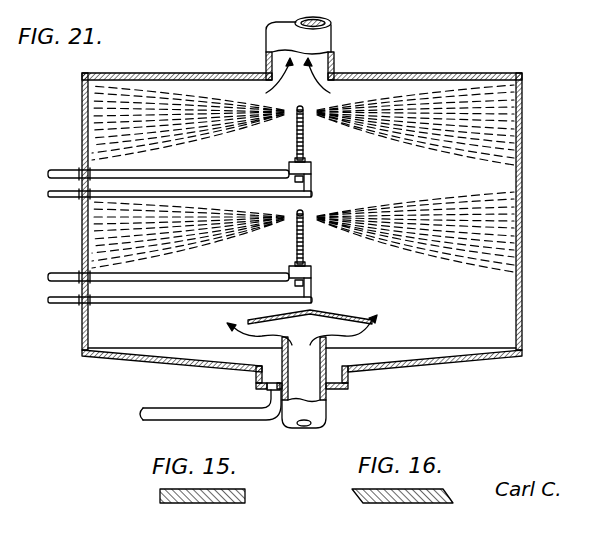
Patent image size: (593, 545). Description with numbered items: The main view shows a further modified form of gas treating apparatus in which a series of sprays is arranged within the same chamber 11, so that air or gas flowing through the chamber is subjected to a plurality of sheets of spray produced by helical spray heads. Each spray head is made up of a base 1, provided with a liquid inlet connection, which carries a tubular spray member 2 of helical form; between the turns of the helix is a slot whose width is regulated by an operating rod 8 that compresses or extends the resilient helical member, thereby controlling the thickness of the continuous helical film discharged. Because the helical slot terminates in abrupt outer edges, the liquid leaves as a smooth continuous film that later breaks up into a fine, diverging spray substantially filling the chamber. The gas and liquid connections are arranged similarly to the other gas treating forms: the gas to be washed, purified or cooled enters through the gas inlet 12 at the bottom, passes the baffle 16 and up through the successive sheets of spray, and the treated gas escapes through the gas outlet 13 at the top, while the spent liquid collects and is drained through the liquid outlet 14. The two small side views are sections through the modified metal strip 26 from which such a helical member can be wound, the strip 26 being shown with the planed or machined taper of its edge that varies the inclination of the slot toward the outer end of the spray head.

In FIG. 21, the base 1 is at (313, 168).
In FIG. 21, the tubular spray member 2 is at (303, 110).
In FIG. 21, the operating rod 8 is at (157, 179).
In FIG. 21, the chamber 11 is at (522, 292).
In FIG. 21, the gas inlet 12 is at (326, 410).
In FIG. 21, the gas outlet 13 is at (322, 37).
In FIG. 21, the liquid outlet 14 is at (207, 400).
In FIG. 21, the baffle 16 is at (330, 317).
In FIG. 15, the plate 26 is at (218, 503).
In FIG. 16, the plate 26 is at (390, 503).